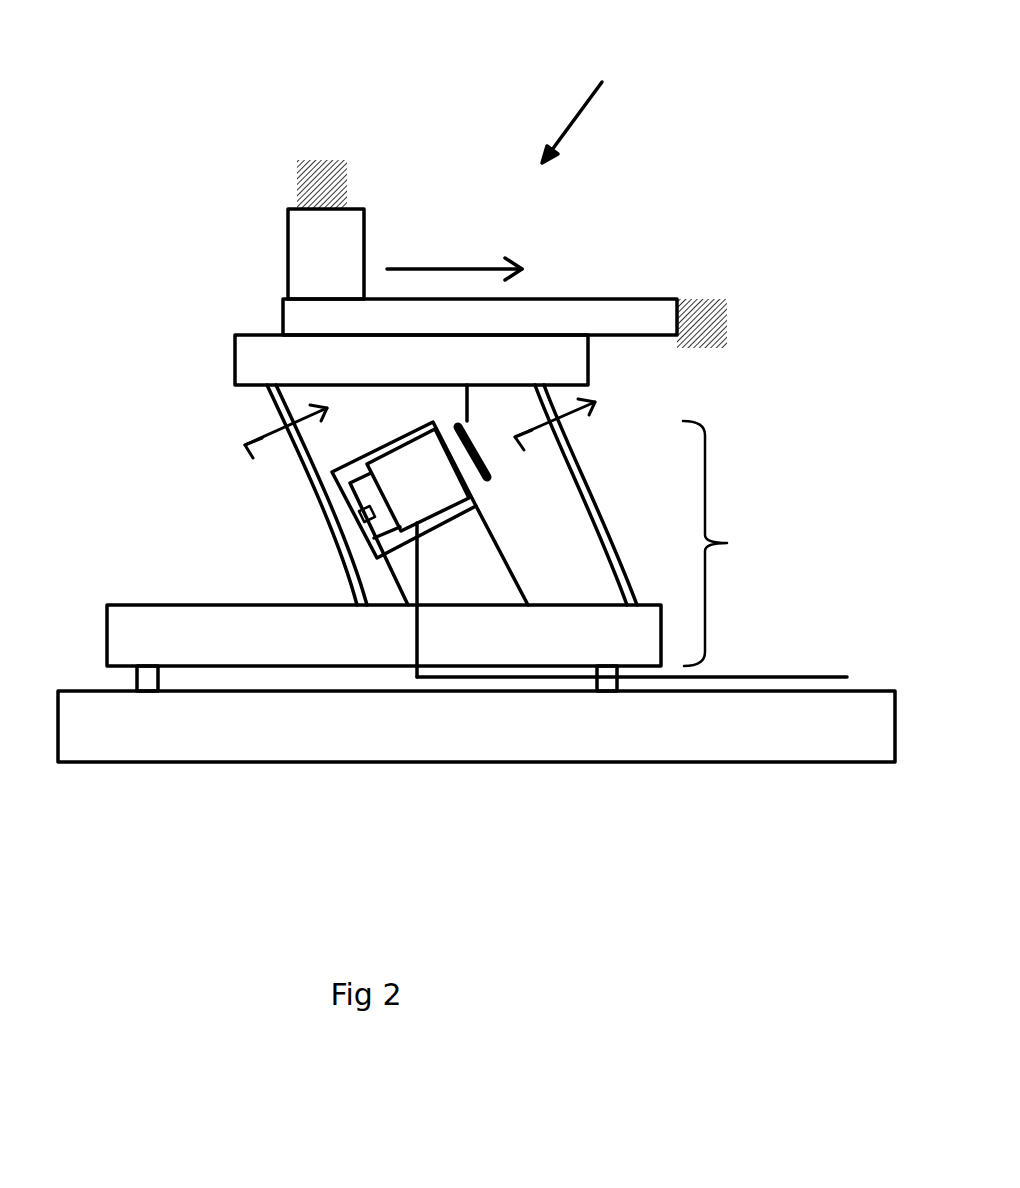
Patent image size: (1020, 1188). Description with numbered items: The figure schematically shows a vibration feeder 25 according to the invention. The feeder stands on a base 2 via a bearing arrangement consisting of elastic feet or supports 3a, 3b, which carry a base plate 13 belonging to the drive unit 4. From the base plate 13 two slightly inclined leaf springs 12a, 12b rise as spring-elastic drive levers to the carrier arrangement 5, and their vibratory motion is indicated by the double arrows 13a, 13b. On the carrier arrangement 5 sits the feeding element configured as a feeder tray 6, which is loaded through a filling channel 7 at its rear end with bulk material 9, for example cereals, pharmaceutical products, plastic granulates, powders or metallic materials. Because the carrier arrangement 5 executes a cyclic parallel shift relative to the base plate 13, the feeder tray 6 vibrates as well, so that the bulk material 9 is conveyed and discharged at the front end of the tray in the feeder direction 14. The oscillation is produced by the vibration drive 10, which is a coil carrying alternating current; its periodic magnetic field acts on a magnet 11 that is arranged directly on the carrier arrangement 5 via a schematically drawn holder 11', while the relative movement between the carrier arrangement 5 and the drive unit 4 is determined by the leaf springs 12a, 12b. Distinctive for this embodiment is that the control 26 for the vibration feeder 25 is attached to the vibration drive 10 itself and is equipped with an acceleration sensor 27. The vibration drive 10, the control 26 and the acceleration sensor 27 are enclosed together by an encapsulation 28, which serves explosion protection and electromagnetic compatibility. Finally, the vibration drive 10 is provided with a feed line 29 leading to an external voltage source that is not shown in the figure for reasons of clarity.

The base 2 is at (816, 747).
The elastic foot 3a is at (148, 681).
The elastic foot 3b is at (605, 682).
The drive unit 4 is at (727, 543).
The carrier arrangement 5 is at (438, 373).
The feeder tray 6 is at (563, 310).
The filling channel 7 is at (303, 265).
The bulk material 9 is at (330, 162).
The vibration drive 10 is at (399, 493).
The magnet 11 is at (506, 462).
The holder 11' is at (421, 404).
The leaf spring 12a is at (272, 402).
The leaf spring 12b is at (603, 513).
The base plate 13 is at (598, 647).
The double arrow 13a is at (278, 433).
The double arrow 13b is at (568, 418).
The feeder direction 14 is at (454, 267).
The vibration feeder 25 is at (599, 93).
The control 26 is at (362, 490).
The acceleration sensor 27 is at (362, 514).
The encapsulation 28 is at (460, 517).
The feed line 29 is at (799, 675).